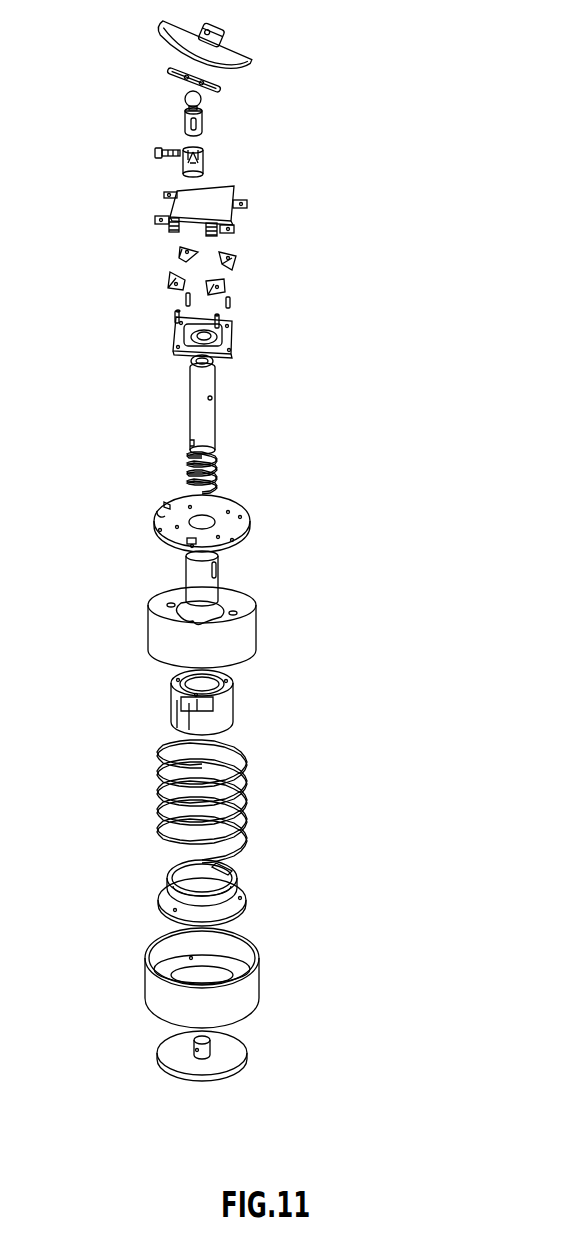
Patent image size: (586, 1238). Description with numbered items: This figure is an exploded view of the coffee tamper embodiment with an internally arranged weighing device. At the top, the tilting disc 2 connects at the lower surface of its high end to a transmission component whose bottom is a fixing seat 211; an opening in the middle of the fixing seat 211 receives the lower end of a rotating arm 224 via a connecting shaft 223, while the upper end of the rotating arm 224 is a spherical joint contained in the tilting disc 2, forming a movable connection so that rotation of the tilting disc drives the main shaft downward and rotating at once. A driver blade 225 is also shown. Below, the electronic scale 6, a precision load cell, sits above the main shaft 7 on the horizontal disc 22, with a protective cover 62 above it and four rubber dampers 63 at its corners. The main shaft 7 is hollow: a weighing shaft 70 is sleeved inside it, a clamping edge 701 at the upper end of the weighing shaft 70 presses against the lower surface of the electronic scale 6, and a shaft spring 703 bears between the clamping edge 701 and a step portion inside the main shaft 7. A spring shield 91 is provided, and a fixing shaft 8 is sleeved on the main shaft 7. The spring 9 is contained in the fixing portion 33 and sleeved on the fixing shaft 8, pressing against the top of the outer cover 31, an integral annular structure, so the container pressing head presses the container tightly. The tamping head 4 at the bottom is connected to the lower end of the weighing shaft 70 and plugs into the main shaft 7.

The tilting disc 2 is at (253, 68).
The driver blade 225 is at (157, 72).
The rotating arm 224 is at (204, 117).
The fixing seat 211 is at (204, 163).
The connecting shaft 223 is at (153, 150).
The protective cover 62 is at (183, 205).
The rubber dampers 63 is at (239, 263).
The electronic scale 6 is at (234, 335).
The clamping edge 701 is at (189, 364).
The weighing shaft 70 is at (206, 418).
The shaft spring 703 is at (214, 478).
The horizontal disc 22 is at (250, 534).
The main shaft 7 is at (195, 573).
The spring shield 91 is at (243, 645).
The fixing shaft 8 is at (231, 717).
The spring 9 is at (243, 807).
The fixing portion 33 is at (244, 907).
The outer cover 31 is at (248, 1003).
The tamping head 4 is at (244, 1070).